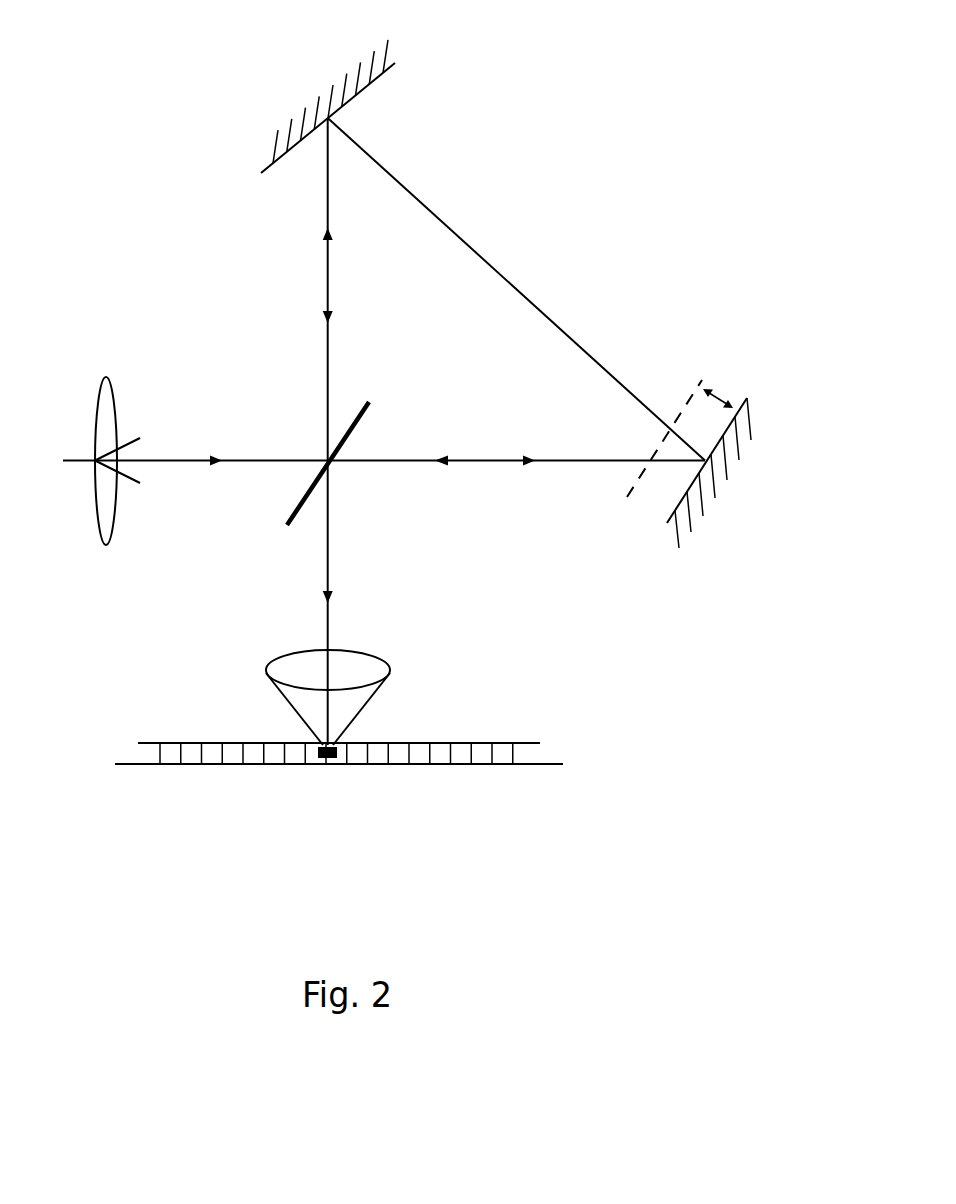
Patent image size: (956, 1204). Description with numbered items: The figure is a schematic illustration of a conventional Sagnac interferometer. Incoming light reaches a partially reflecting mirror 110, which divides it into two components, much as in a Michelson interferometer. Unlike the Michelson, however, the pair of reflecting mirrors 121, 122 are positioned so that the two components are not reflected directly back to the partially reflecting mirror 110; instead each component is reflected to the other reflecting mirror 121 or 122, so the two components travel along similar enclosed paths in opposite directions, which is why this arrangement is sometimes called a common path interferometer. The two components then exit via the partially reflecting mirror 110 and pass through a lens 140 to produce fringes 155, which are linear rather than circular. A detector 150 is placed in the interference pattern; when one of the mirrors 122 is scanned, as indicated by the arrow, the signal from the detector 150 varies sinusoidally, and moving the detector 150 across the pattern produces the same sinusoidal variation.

The partially reflecting mirror 110 is at (362, 409).
The reflecting mirror 121 is at (318, 110).
The reflecting mirror 122 is at (710, 470).
The lens 140 is at (388, 665).
The detector 150 is at (317, 753).
The fringes 155 is at (415, 743).